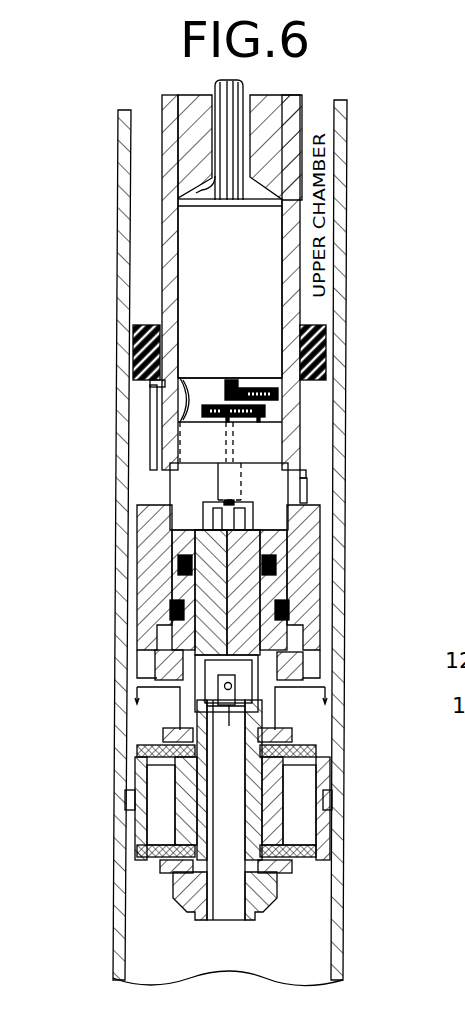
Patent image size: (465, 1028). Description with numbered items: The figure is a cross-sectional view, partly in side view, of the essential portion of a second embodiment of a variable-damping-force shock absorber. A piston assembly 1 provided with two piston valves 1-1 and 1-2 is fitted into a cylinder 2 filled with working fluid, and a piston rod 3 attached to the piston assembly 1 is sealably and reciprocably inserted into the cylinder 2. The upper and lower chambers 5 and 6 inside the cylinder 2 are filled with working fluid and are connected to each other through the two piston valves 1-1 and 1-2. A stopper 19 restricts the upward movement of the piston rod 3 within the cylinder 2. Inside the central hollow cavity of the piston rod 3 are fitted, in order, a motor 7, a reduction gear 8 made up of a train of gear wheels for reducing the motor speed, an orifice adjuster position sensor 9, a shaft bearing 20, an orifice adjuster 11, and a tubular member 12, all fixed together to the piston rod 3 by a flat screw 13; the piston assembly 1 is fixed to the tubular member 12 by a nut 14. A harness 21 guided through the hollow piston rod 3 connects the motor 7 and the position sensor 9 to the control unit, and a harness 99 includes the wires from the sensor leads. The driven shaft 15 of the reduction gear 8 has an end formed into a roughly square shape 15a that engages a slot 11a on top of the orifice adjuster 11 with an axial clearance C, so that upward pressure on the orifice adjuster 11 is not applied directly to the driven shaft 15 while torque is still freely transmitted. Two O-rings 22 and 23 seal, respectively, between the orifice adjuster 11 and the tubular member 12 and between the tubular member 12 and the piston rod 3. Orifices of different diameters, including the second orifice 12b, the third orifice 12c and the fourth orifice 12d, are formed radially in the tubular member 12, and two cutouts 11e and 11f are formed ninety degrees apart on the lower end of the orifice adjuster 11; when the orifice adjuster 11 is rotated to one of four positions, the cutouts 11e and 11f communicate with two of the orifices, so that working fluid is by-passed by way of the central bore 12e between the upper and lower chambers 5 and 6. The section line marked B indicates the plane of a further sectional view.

The piston assembly 1 is at (326, 810).
The piston valve 1-1 is at (300, 748).
The piston valve 1-2 is at (136, 880).
The cylinder 2 is at (346, 146).
The piston rod 3 is at (300, 108).
The upper chamber 5 is at (262, 300).
The lower chamber 6 is at (310, 906).
The motor 7 is at (292, 325).
The reduction gear 8 is at (276, 395).
The orifice adjuster position sensor 9 is at (262, 441).
The orifice adjuster 11 is at (300, 540).
The slot 11a is at (202, 528).
The cutout 11e is at (198, 697).
The cutout 11f is at (226, 708).
The tubular member 12 is at (232, 580).
The second orifice 12b is at (266, 690).
The third orifice 12c is at (214, 655).
The fourth orifice 12d is at (190, 666).
The central bore 12e is at (242, 848).
The flat screw 13 is at (296, 665).
The nut 14 is at (265, 886).
The driven shaft 15 is at (218, 486).
The square shape 15a is at (234, 505).
The stopper 19 is at (322, 352).
The shaft bearing 20 is at (276, 485).
The harness 21 is at (226, 130).
The O-ring 22 is at (272, 565).
The O-ring 23 is at (284, 610).
The harness 99 is at (184, 405).
The clearance C is at (240, 530).
The section line B- B is at (229, 707).